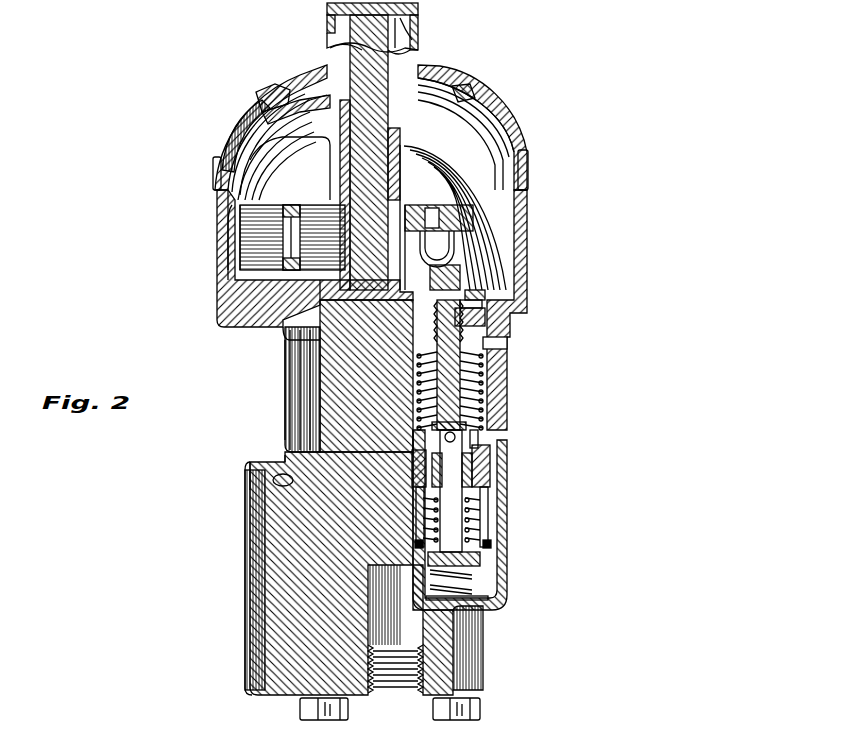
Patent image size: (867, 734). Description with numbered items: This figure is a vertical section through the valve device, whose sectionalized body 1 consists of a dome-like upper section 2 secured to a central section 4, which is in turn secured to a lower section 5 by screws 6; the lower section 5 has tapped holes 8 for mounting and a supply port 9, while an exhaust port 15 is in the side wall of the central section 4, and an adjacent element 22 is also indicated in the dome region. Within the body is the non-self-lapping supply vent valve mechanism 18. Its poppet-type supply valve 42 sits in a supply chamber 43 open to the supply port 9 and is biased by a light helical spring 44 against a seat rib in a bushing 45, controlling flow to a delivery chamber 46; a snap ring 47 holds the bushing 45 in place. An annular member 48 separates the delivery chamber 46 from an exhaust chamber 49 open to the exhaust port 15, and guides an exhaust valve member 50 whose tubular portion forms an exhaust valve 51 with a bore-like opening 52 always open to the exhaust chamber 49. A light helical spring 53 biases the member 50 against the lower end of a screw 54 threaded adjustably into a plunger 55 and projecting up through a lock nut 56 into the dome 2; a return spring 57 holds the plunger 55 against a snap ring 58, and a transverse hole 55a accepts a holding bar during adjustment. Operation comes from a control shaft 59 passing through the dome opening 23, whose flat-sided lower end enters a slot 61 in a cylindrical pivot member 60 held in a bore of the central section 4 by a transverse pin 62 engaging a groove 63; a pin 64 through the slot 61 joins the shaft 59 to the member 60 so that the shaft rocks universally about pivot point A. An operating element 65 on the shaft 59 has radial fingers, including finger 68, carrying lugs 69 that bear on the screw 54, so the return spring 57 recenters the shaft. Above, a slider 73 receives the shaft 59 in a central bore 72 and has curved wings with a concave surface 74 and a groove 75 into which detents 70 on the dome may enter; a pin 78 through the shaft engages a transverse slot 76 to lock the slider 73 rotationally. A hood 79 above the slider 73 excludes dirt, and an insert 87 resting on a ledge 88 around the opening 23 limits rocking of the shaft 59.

The sectionalized body 1 is at (287, 421).
The dome-like upper section 2 is at (222, 283).
The central section 4 is at (340, 387).
The lower section 5 is at (273, 570).
The screws 6 is at (306, 712).
The tapped holes 8 is at (282, 478).
The supply port 9 is at (425, 660).
The exhaust port 15 is at (487, 432).
The supply vent valve mechanism 18 is at (503, 478).
The rotary drive member 22 is at (480, 170).
The dome opening 23 is at (462, 92).
The supply valve 42 is at (475, 573).
The supply chamber 43 is at (472, 585).
The helical spring 44 is at (480, 602).
The bushing 45 is at (493, 545).
The delivery chamber 46 is at (486, 488).
The snap ring 47 is at (488, 520).
The annular member 48 is at (480, 448).
The exhaust chamber 49 is at (478, 372).
The exhaust valve member 50 is at (477, 413).
The exhaust valve 51 is at (470, 562).
The bore-like opening 52 is at (455, 463).
The helical spring 53 is at (478, 502).
The screw 54 is at (500, 327).
The plunger 55 is at (462, 322).
The transverse hole 55a is at (485, 343).
The lock nut 56 is at (480, 297).
The return spring 57 is at (470, 393).
The snap ring 58 is at (470, 306).
The control shaft 59 is at (368, 53).
The pivot member 60 is at (250, 256).
The slot 61 is at (290, 345).
The transverse pin 62 is at (243, 224).
The groove 63 is at (283, 240).
The pin 64 is at (300, 352).
The operating element 65 is at (340, 162).
The finger 68 is at (470, 222).
The lugs 69 is at (455, 248).
The detents 70 is at (327, 107).
The central bore 72 is at (422, 77).
The slider 73 is at (345, 47).
The concave surface 74 is at (263, 130).
The groove 75 is at (492, 128).
The transverse slot 76 is at (412, 28).
The pin 78 is at (330, 15).
The hood 79 is at (522, 152).
The insert 87 is at (268, 82).
The ledge 88 is at (262, 100).
The pivot point A is at (302, 372).